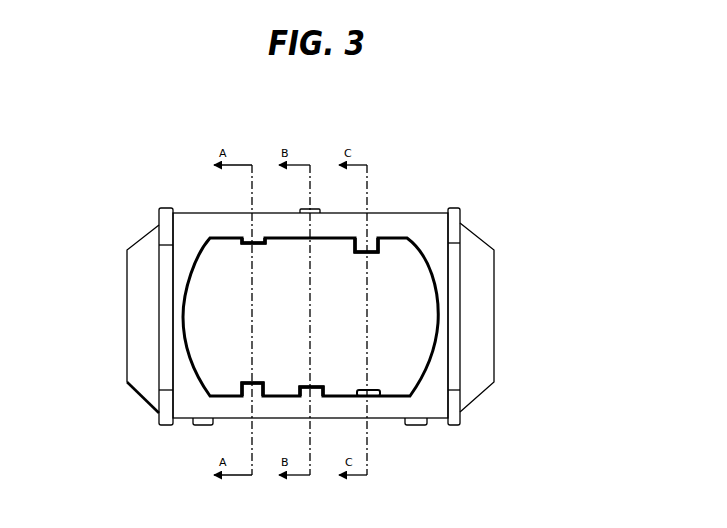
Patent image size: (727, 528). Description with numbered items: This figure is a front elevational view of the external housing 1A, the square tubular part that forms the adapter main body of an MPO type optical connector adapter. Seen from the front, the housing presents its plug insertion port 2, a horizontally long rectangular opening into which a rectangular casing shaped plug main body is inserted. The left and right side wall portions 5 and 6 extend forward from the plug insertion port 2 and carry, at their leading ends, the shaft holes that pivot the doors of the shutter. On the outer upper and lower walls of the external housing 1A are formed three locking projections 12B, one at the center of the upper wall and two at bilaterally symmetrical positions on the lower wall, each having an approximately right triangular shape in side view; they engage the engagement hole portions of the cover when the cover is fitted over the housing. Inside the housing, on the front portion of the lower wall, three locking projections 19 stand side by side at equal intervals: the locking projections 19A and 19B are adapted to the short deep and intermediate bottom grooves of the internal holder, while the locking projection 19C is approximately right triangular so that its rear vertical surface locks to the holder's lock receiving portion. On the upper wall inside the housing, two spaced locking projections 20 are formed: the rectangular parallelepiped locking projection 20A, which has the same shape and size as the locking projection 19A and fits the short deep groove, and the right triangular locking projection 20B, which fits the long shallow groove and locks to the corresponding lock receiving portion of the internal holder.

The external housing 1A is at (437, 205).
The plug insertion port 2 is at (195, 358).
The right side wall portion 5 is at (455, 325).
The left side wall portion 6 is at (167, 328).
The locking projection 12B is at (315, 209).
The locking projection 19 is at (233, 298).
The locking projection 19A is at (248, 382).
The locking projection 19B is at (305, 387).
The locking projection 19C is at (360, 389).
The locking projection 20 is at (378, 258).
The locking projection 20A is at (353, 259).
The locking projection 20B is at (247, 256).